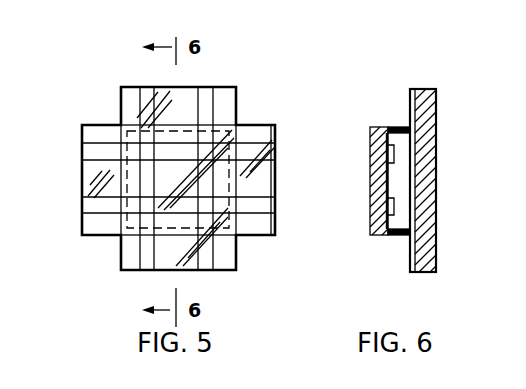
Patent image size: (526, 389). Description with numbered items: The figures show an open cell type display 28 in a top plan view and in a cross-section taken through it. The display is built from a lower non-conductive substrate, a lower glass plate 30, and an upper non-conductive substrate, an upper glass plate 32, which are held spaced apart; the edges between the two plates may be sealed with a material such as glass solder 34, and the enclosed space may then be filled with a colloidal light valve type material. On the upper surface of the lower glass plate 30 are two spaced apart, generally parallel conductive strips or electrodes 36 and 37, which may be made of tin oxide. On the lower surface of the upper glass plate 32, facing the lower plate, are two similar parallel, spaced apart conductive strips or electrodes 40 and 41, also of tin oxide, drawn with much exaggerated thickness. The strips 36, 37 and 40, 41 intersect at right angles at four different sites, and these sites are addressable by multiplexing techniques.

In FIG. 5, the open cell type display 28 is at (284, 118).
In FIG. 5, the lower glass plate 30 is at (120, 104).
In FIG. 6, the lower glass plate 30 is at (424, 92).
In FIG. 5, the upper glass plate 32 is at (268, 125).
In FIG. 6, the upper glass plate 32 is at (378, 125).
In FIG. 6, the glass solder 34 is at (396, 125).
In FIG. 5, the conductive strip or electrode 36 is at (138, 240).
In FIG. 6, the conductive strip or electrode 36 is at (415, 170).
In FIG. 5, the conductive strip or electrode 37 is at (213, 247).
In FIG. 5, the conductive strip or electrode 40 is at (98, 152).
In FIG. 6, the conductive strip or electrode 40 is at (388, 157).
In FIG. 5, the conductive strip or electrode 41 is at (97, 211).
In FIG. 6, the conductive strip or electrode 41 is at (388, 210).